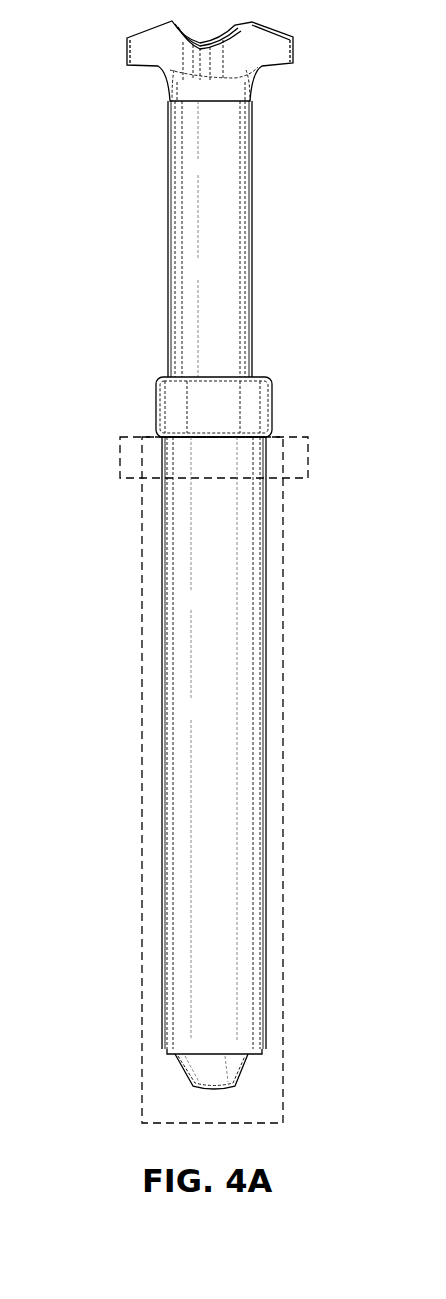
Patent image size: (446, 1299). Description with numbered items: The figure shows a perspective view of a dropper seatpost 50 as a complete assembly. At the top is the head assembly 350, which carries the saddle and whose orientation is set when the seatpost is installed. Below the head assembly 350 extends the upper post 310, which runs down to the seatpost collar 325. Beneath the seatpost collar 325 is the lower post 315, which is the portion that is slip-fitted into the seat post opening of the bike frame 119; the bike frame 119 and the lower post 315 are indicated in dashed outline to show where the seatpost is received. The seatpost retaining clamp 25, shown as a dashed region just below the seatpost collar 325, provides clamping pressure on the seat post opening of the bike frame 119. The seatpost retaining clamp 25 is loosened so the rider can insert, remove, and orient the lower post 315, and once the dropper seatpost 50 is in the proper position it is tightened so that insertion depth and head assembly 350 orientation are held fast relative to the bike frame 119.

The head assembly 350 is at (126, 52).
The upper post 310 is at (168, 240).
The seatpost collar 325 is at (156, 398).
The seatpost retaining clamp 25 is at (119, 447).
The lower post 315 is at (162, 613).
The bike frame 119 is at (142, 1020).
The dropper seatpost 50 is at (347, 22).